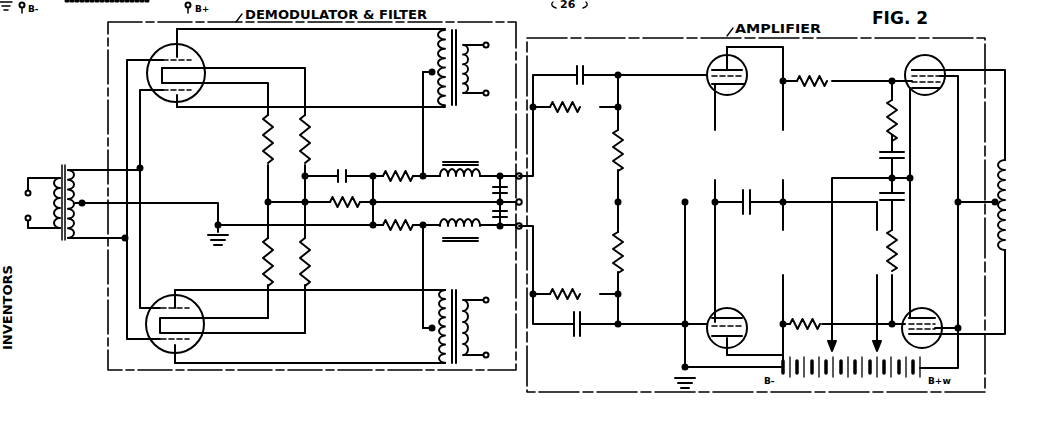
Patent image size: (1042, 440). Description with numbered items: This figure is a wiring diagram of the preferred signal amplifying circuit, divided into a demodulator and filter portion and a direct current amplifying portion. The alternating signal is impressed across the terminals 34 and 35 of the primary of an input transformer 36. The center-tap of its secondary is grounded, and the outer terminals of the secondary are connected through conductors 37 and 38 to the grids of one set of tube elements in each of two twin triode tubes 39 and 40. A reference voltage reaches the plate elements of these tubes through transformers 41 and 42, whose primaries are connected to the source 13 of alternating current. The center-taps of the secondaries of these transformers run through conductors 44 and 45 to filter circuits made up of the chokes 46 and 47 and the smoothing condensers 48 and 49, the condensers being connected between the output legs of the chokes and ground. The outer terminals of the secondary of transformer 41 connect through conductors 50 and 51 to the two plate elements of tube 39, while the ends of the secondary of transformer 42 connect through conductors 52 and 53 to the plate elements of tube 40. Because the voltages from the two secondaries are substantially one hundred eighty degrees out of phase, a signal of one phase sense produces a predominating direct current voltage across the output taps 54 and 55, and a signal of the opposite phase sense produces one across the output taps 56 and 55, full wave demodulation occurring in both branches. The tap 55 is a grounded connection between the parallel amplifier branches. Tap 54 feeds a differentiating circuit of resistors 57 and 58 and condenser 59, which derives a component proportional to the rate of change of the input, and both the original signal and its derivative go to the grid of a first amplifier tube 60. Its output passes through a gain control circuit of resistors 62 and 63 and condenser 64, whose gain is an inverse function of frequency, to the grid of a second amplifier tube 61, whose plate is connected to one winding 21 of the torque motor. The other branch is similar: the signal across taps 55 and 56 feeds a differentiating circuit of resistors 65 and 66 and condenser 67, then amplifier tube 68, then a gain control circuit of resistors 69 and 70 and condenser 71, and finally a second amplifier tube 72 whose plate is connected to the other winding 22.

The source of alternating current 13 is at (485, 71).
The winding of torque motor 21 is at (1005, 186).
The other winding of torque motor 22 is at (1005, 234).
The terminal 34 is at (23, 190).
The terminal 35 is at (25, 217).
The input transformer 36 is at (68, 167).
The conductor 37 is at (143, 170).
The conductor 38 is at (128, 240).
The twin triode tube 39 is at (184, 52).
The twin triode tube 40 is at (199, 346).
The transformer 41 is at (458, 106).
The transformer 42 is at (455, 297).
The conductor 44 is at (421, 127).
The conductor 45 is at (421, 247).
The choke 46 is at (466, 162).
The choke 47 is at (467, 244).
The smoothing condenser 48 is at (492, 187).
The smoothing condenser 49 is at (492, 212).
The conductor 50 is at (361, 30).
The conductor 51 is at (362, 107).
The conductor 52 is at (396, 291).
The conductor 53 is at (394, 363).
The output tap 54 is at (522, 178).
The output tap 55 is at (522, 203).
The output tap 56 is at (522, 227).
The resistor 57 is at (564, 110).
The resistor 58 is at (622, 138).
The condenser 59 is at (582, 70).
The first amplifier tube 60 is at (707, 66).
The second amplifier tube 61 is at (906, 70).
The resistor 62 is at (818, 76).
The resistor 63 is at (887, 110).
The condenser 64 is at (878, 157).
The resistor 65 is at (566, 289).
The resistor 66 is at (622, 246).
The condenser 67 is at (579, 340).
The amplifier tube 68 is at (713, 340).
The resistor 69 is at (810, 318).
The resistor 70 is at (897, 250).
The condenser 71 is at (904, 201).
The second amplifier tube 72 is at (926, 345).